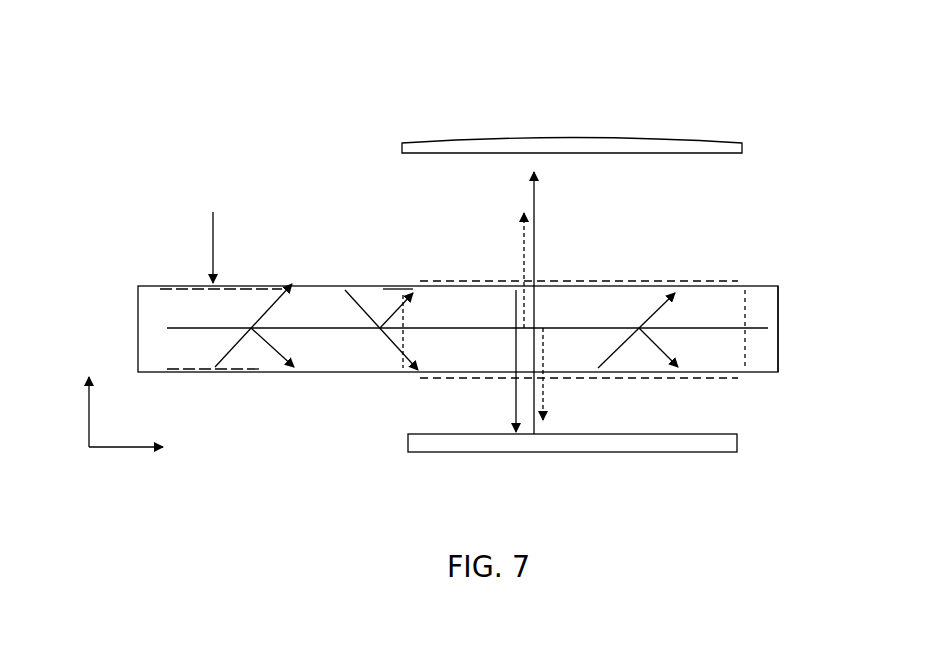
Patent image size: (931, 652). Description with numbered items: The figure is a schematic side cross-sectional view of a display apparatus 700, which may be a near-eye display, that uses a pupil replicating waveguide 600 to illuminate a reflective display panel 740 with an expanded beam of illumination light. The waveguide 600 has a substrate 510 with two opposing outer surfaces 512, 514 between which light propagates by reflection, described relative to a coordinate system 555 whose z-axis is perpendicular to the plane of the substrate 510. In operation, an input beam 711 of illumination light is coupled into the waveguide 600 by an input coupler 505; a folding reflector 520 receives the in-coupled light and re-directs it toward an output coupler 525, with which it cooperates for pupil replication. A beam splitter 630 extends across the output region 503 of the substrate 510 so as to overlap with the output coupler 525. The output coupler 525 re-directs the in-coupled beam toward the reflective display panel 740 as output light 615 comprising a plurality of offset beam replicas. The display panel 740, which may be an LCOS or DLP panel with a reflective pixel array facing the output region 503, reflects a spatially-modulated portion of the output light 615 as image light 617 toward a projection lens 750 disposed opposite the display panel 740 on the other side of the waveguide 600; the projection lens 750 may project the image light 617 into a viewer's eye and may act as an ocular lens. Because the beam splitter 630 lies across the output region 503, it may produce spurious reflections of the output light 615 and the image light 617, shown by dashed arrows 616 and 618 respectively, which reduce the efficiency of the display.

The display apparatus 700 is at (495, 34).
The pupil replicating waveguide 600 is at (300, 203).
The input coupler 505 is at (197, 283).
The substrate 510 is at (730, 373).
The outer surface 512 is at (288, 283).
The outer surface 514 is at (355, 375).
The folding reflector 520 is at (225, 373).
The output coupler 525 is at (743, 287).
The output region 503 is at (617, 281).
The beam splitter 630 is at (430, 332).
The input beam 711 is at (215, 253).
The output light 615 is at (512, 420).
The spurious reflection of output light 616 is at (524, 232).
The image light 617 is at (537, 260).
The spurious reflection of image light 618 is at (543, 382).
The reflective display panel 740 is at (617, 453).
The projection lens 750 is at (455, 138).
The coordinate system 555 is at (83, 462).